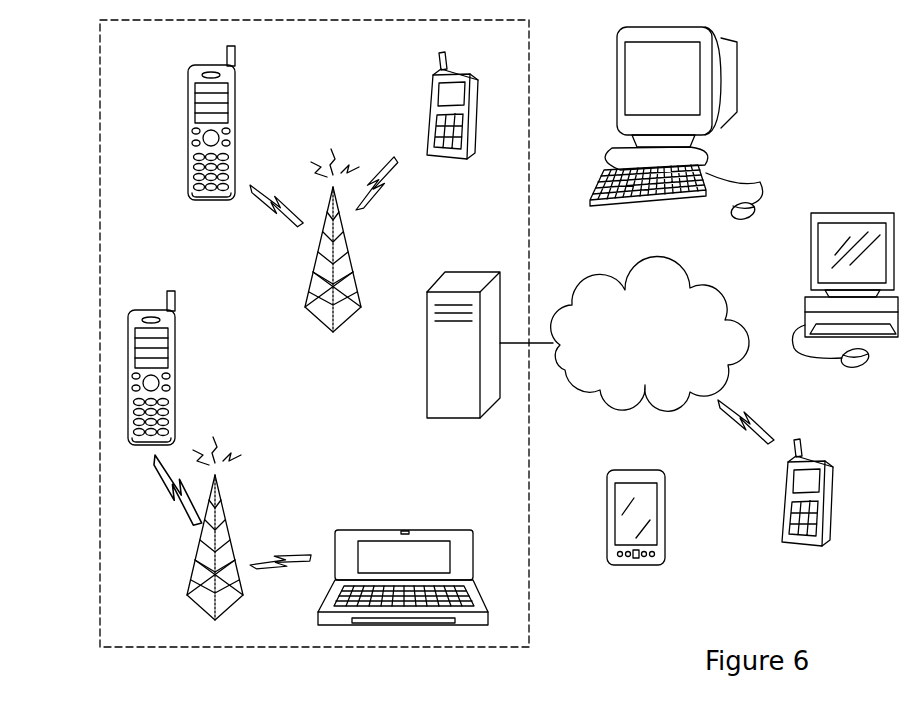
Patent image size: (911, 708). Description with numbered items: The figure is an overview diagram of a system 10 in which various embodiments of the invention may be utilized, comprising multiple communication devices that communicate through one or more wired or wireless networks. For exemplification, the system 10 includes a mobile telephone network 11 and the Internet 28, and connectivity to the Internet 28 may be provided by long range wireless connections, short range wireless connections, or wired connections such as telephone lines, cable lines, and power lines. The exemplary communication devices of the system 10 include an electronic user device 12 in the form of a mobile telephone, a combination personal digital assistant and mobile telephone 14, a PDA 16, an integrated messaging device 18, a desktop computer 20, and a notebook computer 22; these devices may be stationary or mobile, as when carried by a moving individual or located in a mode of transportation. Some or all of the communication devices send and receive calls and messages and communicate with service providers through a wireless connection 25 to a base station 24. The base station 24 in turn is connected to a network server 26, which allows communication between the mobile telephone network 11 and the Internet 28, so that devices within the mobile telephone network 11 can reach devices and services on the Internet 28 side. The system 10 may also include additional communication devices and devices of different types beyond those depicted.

The system 10 is at (890, 428).
The mobile telephone network 11 is at (137, 56).
The electronic user device 12 is at (238, 135).
The combination personal digital assistant and mobile telephone 14 is at (405, 530).
The PDA 16 is at (665, 515).
The integrated messaging device 18 is at (433, 109).
The desktop computer 20 is at (737, 73).
The notebook computer 22 is at (850, 213).
The base station 24 is at (345, 247).
The wireless connection 25 is at (171, 514).
The network server 26 is at (427, 356).
The Internet 28 is at (675, 288).